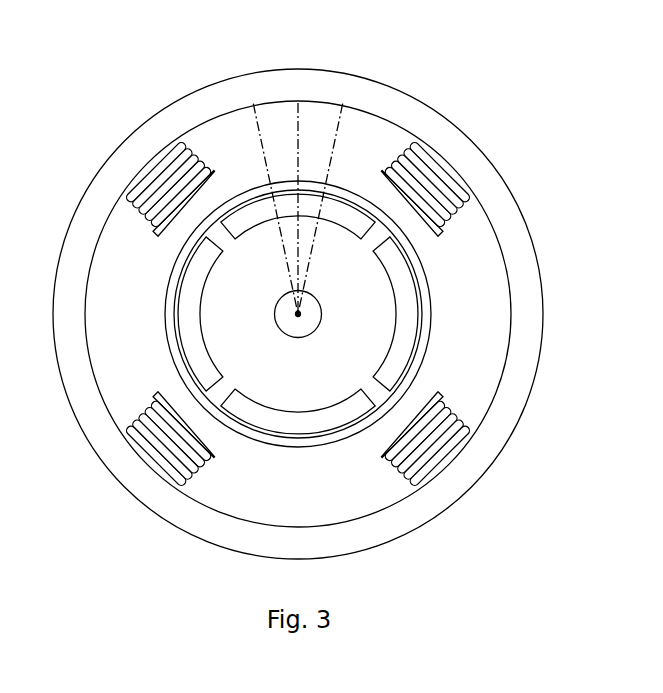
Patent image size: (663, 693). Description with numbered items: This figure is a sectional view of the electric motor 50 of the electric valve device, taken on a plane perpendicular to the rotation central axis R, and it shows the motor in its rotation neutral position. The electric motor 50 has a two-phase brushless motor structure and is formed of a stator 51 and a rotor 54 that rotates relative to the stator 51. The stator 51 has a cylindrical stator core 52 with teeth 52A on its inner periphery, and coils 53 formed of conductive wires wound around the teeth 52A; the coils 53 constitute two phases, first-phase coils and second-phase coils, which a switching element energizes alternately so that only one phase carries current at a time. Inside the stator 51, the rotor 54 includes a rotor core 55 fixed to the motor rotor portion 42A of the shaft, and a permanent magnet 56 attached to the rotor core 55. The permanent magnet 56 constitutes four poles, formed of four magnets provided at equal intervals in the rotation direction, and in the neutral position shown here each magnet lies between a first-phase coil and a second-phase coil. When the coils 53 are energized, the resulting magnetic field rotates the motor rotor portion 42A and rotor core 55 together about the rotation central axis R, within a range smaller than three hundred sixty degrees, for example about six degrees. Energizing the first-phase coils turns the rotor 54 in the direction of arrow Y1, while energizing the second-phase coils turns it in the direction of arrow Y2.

The electric motor 50 is at (100, 73).
The stator 51 is at (545, 283).
The stator core 52 is at (538, 334).
The teeth 52A is at (213, 173).
The coils 53 is at (152, 175).
The rotor 54 is at (445, 295).
The rotor core 55 is at (337, 393).
The permanent magnet 56 is at (252, 221).
The motor rotor portion 42A is at (296, 331).
The rotation central axis R is at (301, 314).
The arrow Y1 is at (298, 134).
The arrow Y2 is at (260, 134).